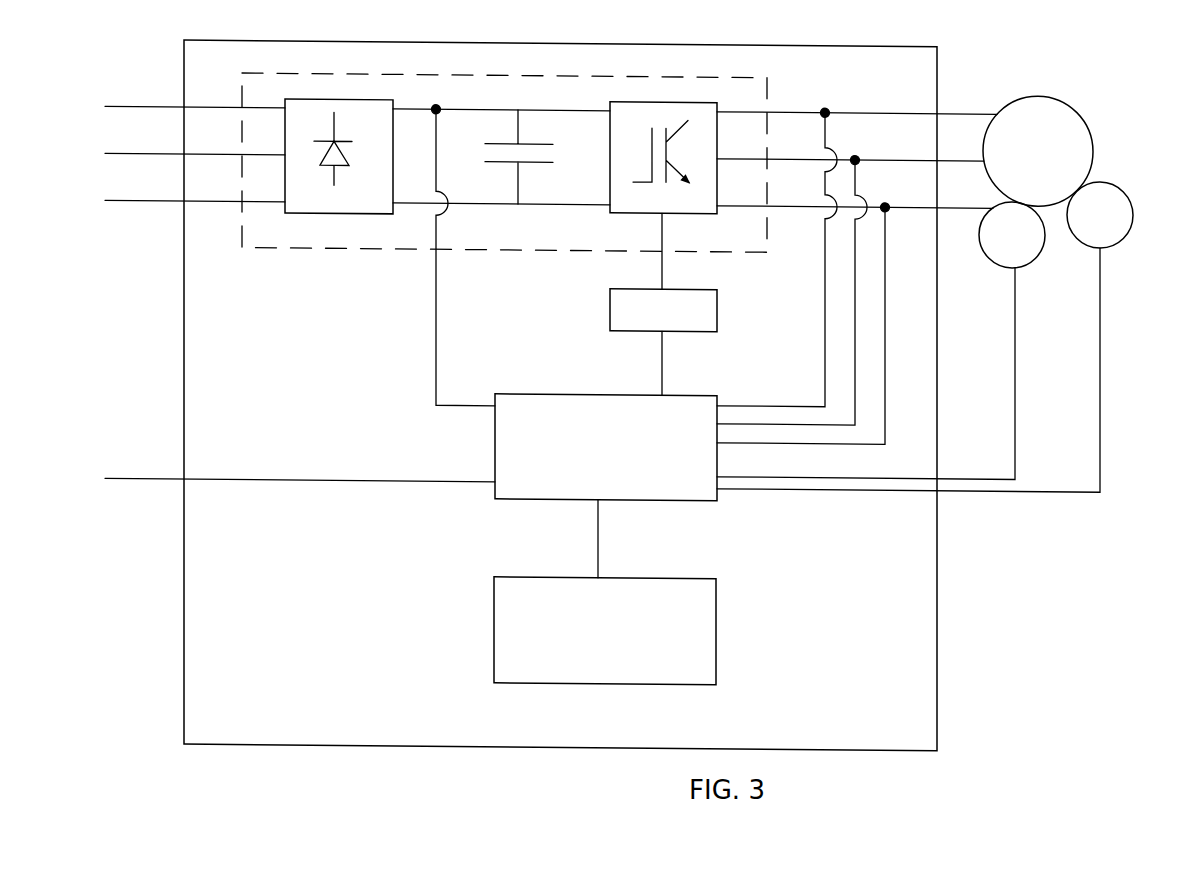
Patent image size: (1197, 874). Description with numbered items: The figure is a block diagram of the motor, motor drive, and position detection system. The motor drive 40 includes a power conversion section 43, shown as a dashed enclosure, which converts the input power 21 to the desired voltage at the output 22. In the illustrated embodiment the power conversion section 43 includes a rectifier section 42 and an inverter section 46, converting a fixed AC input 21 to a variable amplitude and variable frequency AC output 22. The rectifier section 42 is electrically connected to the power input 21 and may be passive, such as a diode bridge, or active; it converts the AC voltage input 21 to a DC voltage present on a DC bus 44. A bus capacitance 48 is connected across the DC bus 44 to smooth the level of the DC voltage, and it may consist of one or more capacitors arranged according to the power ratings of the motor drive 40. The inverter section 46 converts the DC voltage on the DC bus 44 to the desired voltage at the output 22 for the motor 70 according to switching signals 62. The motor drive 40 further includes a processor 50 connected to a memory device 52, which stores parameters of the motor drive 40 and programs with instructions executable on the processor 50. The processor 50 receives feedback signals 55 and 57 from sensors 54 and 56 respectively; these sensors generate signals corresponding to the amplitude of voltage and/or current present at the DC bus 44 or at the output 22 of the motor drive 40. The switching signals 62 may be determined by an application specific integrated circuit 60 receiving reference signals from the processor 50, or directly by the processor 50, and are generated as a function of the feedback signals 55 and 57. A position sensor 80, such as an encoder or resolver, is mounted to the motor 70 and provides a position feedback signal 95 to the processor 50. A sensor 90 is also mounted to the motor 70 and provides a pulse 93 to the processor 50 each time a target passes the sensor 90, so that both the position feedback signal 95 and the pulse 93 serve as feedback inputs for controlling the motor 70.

The power input 21 is at (172, 100).
The output 22 is at (941, 104).
The motor drive 40 is at (768, 40).
The rectifier section 42 is at (355, 212).
The power conversion section 43 is at (330, 248).
The DC bus 44 is at (584, 91).
The inverter section 46 is at (610, 158).
The bus capacitance 48 is at (503, 164).
The processor 50 is at (563, 391).
The memory device 52 is at (494, 622).
The sensor 54 is at (436, 102).
The feedback signal 55 is at (432, 361).
The sensor 56 is at (887, 197).
The feedback signal 57 is at (826, 392).
The application specific integrated circuit 60 is at (610, 316).
The switching signals 62 is at (663, 259).
The motor 70 is at (1077, 105).
The position sensor 80 is at (984, 244).
The sensor 90 is at (1125, 189).
The pulse 93 is at (1100, 399).
The position feedback signal 95 is at (1016, 400).